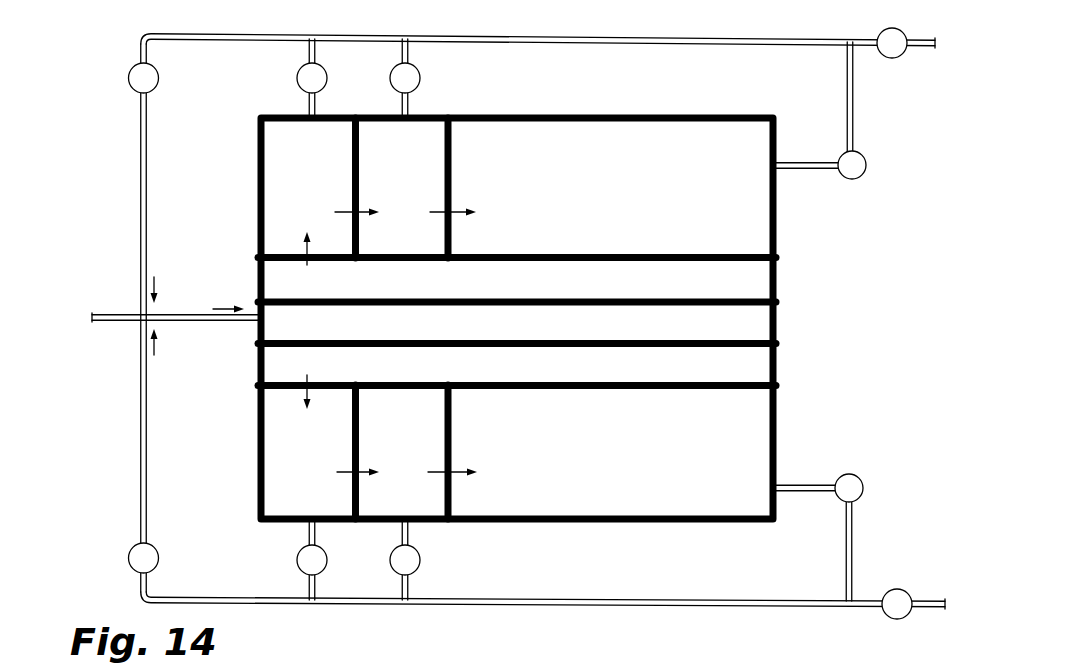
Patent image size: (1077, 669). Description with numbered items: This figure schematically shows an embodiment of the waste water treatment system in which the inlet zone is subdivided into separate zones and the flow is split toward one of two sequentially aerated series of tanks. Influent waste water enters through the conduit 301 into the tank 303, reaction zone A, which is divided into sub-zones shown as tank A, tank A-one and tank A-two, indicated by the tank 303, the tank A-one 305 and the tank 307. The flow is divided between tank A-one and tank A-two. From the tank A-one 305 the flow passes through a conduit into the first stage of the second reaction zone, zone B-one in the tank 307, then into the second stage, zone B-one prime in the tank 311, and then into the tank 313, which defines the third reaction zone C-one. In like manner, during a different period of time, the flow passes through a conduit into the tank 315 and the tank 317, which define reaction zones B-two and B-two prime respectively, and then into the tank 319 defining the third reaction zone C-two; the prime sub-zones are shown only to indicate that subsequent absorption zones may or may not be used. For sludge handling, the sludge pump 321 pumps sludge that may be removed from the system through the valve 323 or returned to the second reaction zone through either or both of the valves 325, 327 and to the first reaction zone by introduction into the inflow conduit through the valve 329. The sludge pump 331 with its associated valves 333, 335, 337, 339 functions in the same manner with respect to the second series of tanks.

The conduit 301 is at (110, 313).
The tank 303 is at (672, 332).
The tank A1 305 is at (695, 288).
The tank 307 is at (672, 375).
The tank 311 is at (395, 133).
The tank 313 is at (617, 137).
The tank 315 is at (277, 483).
The tank 317 is at (398, 498).
The tank 319 is at (640, 502).
The sludge pump 321 is at (860, 178).
The valve 323 is at (893, 58).
The valve 325 is at (420, 82).
The valve 327 is at (298, 74).
The valve 329 is at (130, 84).
The sludge pump 331 is at (887, 458).
The valve 333 is at (885, 617).
The valve 335 is at (420, 558).
The valve 337 is at (297, 560).
The valve 339 is at (129, 553).